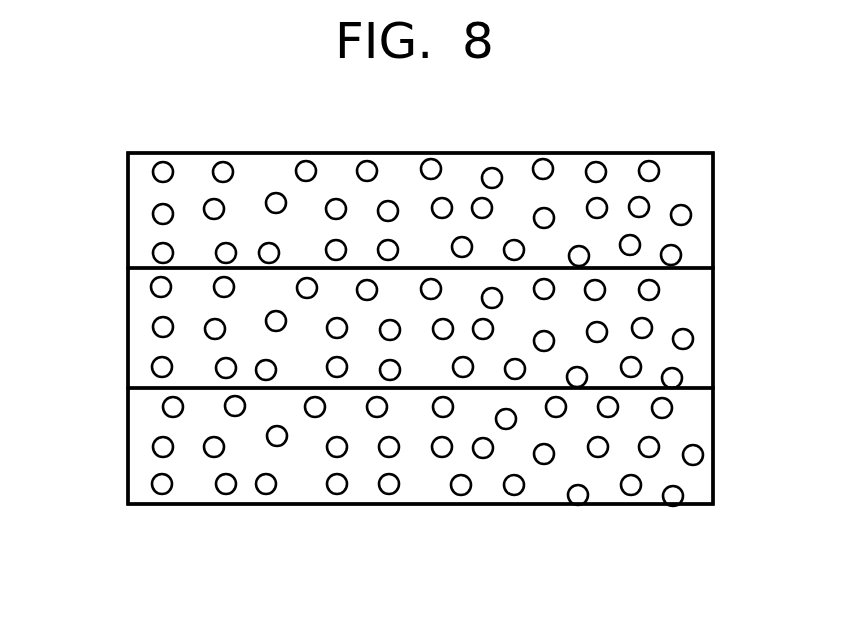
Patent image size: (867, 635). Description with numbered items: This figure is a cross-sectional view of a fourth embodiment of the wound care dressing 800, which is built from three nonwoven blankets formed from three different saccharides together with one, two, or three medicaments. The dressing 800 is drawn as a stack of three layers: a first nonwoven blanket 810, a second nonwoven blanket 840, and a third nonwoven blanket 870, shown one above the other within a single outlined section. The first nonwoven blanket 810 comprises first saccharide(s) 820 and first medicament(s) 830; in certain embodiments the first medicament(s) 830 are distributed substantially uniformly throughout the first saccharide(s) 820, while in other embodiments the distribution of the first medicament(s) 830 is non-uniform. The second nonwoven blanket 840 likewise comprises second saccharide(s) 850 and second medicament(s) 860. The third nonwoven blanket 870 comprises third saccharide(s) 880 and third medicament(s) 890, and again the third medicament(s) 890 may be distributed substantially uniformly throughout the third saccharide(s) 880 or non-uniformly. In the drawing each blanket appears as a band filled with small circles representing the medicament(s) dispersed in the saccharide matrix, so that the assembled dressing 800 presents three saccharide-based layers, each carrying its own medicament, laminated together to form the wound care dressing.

The wound care dressing 800 is at (598, 513).
The first nonwoven blanket 810 is at (718, 445).
The first saccharide(s) 820 is at (138, 470).
The first medicament(s) 830 is at (163, 487).
The second nonwoven blanket 840 is at (718, 332).
The second saccharide(s) 850 is at (146, 308).
The second medicament(s) 860 is at (161, 367).
The third nonwoven blanket 870 is at (718, 222).
The third saccharide(s) 880 is at (145, 192).
The third medicament(s) 890 is at (162, 172).